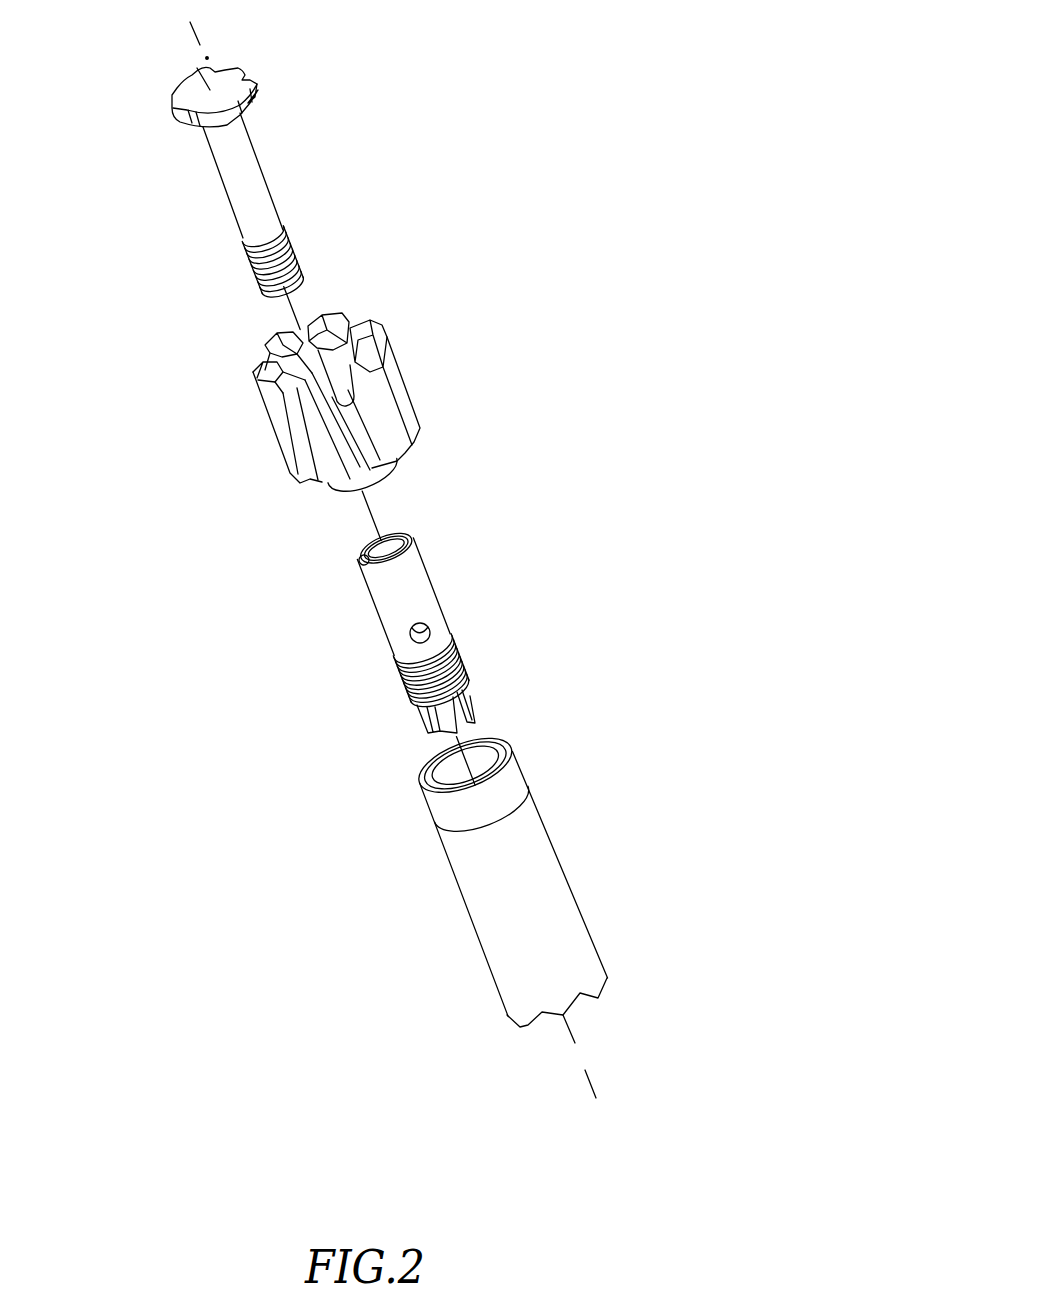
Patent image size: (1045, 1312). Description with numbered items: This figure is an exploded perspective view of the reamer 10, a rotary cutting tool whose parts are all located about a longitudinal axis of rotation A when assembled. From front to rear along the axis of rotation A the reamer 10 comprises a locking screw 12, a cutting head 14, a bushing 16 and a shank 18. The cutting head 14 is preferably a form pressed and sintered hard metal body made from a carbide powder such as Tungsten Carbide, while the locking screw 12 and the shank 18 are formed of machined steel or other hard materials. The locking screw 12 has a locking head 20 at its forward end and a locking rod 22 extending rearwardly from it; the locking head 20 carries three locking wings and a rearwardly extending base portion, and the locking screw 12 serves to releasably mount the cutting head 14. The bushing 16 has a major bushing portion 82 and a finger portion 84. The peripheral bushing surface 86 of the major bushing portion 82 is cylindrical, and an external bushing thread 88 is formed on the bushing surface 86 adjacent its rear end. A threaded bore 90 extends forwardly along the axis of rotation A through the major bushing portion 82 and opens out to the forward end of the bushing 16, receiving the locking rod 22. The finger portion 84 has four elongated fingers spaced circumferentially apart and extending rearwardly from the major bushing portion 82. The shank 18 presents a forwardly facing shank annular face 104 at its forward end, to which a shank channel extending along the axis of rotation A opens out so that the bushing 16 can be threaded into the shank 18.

The reamer 10 is at (436, 552).
The locking screw 12 is at (230, 159).
The cutting head 14 is at (448, 321).
The bushing 16 is at (486, 599).
The shank 18 is at (516, 877).
The locking head 20 is at (167, 125).
The locking rod 22 is at (223, 200).
The major bushing portion 82 is at (408, 612).
The finger portion 84 is at (483, 687).
The bushing surface 86 is at (387, 602).
The external bushing thread 88 is at (407, 690).
The threaded bore 90 is at (358, 543).
The shank annular face 104 is at (422, 772).
The axis of rotation A is at (580, 1057).